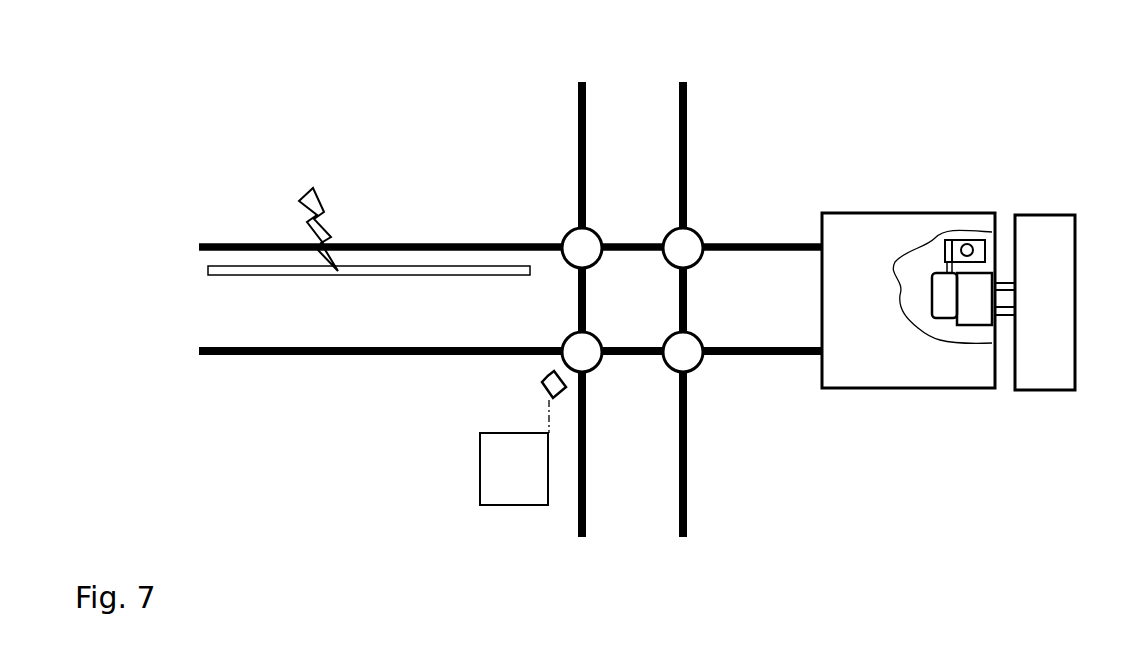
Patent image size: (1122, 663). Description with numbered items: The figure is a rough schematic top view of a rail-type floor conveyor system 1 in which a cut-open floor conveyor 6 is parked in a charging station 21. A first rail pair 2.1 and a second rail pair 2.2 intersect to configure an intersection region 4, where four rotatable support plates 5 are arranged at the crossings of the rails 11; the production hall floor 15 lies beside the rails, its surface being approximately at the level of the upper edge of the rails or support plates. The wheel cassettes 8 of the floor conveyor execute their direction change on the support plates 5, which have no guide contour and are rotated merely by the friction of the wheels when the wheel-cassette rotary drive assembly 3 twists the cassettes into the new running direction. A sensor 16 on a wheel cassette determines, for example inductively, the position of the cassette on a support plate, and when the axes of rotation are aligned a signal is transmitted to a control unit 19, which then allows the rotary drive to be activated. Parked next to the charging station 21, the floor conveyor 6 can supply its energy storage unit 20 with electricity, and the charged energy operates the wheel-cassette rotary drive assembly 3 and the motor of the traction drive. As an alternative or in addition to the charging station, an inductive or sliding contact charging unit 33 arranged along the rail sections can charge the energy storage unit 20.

The system 1 is at (778, 104).
The first rail pair 2.1 is at (634, 103).
The second rail pair 2.2 is at (245, 368).
The wheel-cassette rotary drive assembly 3 is at (943, 308).
The intersection region 4 is at (616, 288).
The rotatable support plates 5 is at (687, 247).
The floor conveyor 6 is at (837, 358).
The wheel cassettes 8 is at (968, 246).
The rail 11 is at (687, 472).
The production hall floor 15 is at (358, 455).
The sensor 16 is at (563, 397).
The control unit 19 is at (500, 485).
The energy storage unit 20 is at (982, 297).
The charging station 21 is at (1047, 375).
The inductive or sliding contact charging unit 33 is at (344, 257).